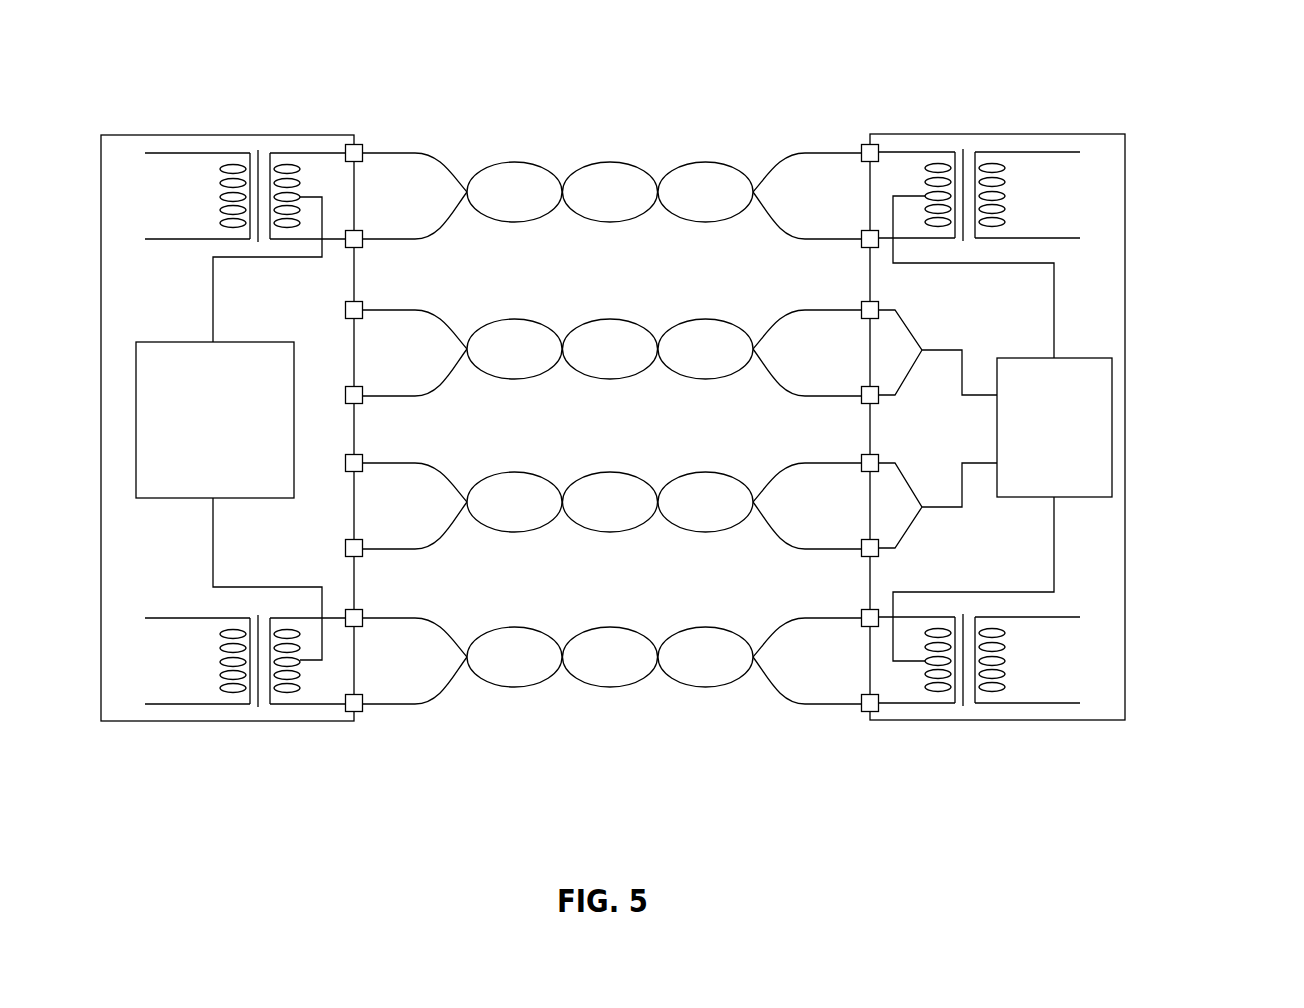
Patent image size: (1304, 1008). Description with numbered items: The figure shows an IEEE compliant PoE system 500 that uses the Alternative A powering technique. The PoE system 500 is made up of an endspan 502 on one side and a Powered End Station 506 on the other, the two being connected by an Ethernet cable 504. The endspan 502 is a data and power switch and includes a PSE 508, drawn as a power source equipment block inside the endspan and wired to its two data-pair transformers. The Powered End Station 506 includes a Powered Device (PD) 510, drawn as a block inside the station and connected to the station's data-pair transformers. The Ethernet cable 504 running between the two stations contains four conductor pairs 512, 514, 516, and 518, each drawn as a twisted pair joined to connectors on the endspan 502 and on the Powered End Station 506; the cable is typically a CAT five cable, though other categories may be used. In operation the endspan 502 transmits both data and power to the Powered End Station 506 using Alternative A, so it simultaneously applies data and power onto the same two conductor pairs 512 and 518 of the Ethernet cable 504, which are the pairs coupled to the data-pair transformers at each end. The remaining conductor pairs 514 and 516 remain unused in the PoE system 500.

The PoE system 500 is at (1205, 98).
The endspan 502 is at (227, 721).
The Ethernet cable 504 is at (605, 87).
The Powered End Station 506 is at (997, 720).
The PSE 508 is at (136, 420).
The Powered Device (PD) 510 is at (1112, 434).
The conductor pair 512 is at (507, 153).
The conductor pair 514 is at (518, 310).
The conductor pair 516 is at (521, 464).
The conductor pair 518 is at (518, 615).